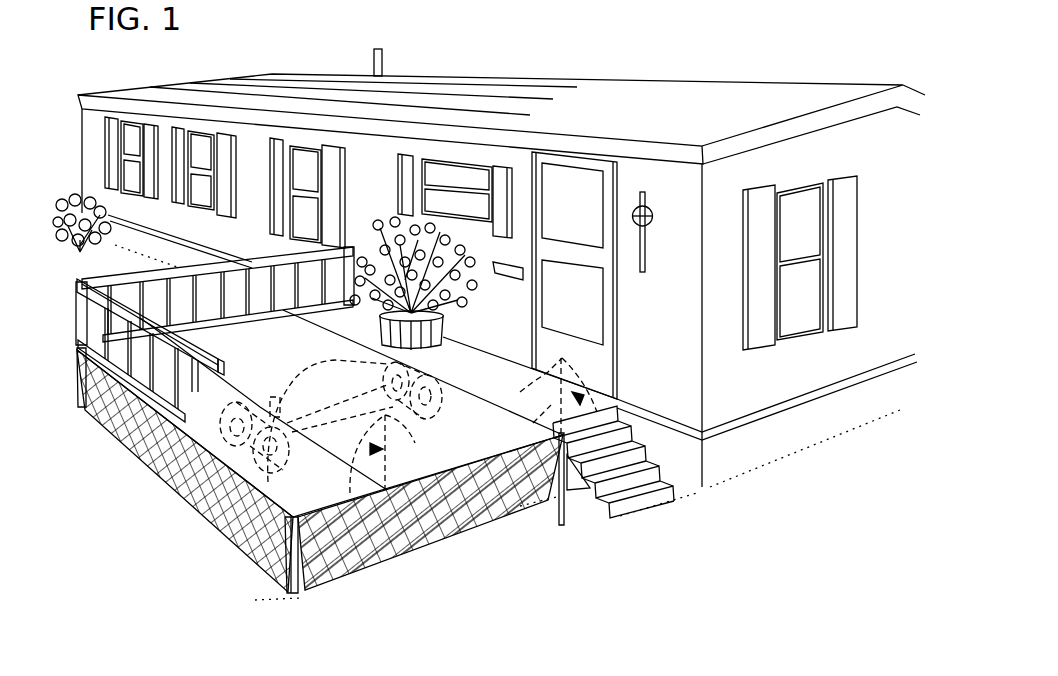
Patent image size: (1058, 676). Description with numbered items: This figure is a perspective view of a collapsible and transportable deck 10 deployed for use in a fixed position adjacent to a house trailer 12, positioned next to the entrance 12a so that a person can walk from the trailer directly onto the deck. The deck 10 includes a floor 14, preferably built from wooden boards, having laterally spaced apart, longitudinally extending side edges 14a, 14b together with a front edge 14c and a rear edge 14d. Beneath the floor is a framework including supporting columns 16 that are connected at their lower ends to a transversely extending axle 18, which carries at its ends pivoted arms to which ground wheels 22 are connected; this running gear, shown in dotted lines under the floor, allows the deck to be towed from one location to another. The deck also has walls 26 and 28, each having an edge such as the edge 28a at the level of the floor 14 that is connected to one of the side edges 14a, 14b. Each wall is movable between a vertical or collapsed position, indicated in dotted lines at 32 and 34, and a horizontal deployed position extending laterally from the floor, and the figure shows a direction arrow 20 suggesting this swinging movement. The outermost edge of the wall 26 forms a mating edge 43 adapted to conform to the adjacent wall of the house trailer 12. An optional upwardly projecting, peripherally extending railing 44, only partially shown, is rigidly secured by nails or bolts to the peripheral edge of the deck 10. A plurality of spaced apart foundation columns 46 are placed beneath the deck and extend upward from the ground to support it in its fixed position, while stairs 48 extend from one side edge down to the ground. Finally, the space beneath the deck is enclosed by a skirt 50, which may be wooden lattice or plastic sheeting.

The deck 10 is at (64, 331).
The house trailer 12 is at (523, 95).
The entrance 12a is at (590, 303).
The floor 14 is at (477, 402).
The side edge 14a is at (453, 388).
The side edge 14b is at (296, 432).
The front edge 14c is at (466, 465).
The rear edge 14d is at (96, 283).
The supporting columns 16 is at (355, 361).
The axle 18 is at (348, 389).
The pivoting direction arrow 20 is at (412, 447).
The ground wheels 22 is at (274, 482).
The wall 26 is at (453, 338).
The wall 28 is at (157, 477).
The edge 28a is at (212, 389).
The vertical or collapsed position 32 is at (392, 457).
The vertical or collapsed position 34 is at (535, 422).
The mating edge 43 is at (497, 353).
The railing 44 is at (80, 286).
The foundation columns 46 is at (77, 377).
The stairs 48 is at (643, 463).
The skirt 50 is at (110, 433).